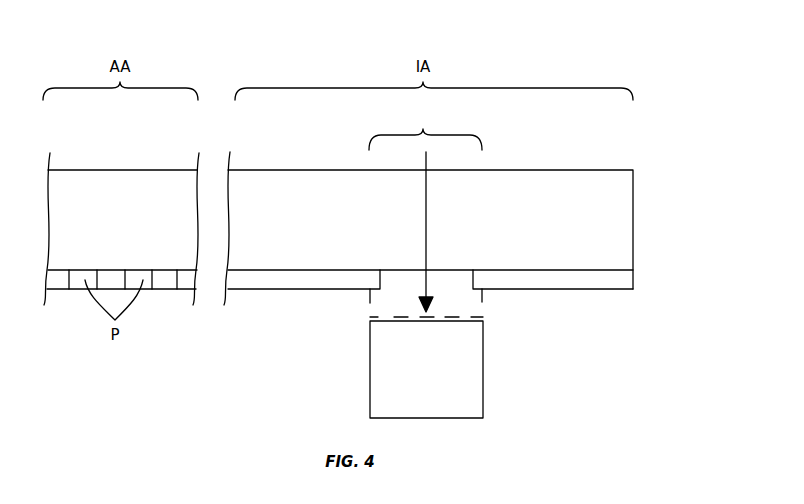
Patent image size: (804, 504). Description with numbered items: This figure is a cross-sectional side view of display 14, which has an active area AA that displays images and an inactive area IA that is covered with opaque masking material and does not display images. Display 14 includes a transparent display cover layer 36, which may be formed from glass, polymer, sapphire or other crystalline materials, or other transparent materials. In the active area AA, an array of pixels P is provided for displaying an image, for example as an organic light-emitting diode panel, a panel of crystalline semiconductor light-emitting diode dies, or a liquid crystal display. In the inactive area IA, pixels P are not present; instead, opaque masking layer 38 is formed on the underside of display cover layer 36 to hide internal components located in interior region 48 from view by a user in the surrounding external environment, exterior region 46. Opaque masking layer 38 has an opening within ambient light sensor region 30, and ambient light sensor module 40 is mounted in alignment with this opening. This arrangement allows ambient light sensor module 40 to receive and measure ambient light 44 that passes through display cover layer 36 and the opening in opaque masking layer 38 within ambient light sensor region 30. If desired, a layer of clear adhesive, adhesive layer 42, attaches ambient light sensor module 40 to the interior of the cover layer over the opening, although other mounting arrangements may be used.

The display 14 is at (458, 155).
The ambient light sensor region 30 is at (425, 128).
The display cover layer 36 is at (633, 220).
The opaque masking layer 38 is at (294, 277).
The ambient light sensor module 40 is at (478, 370).
The adhesive layer 42 is at (482, 302).
The ambient light 44 is at (426, 218).
The exterior region 46 is at (664, 95).
The interior region 48 is at (288, 366).